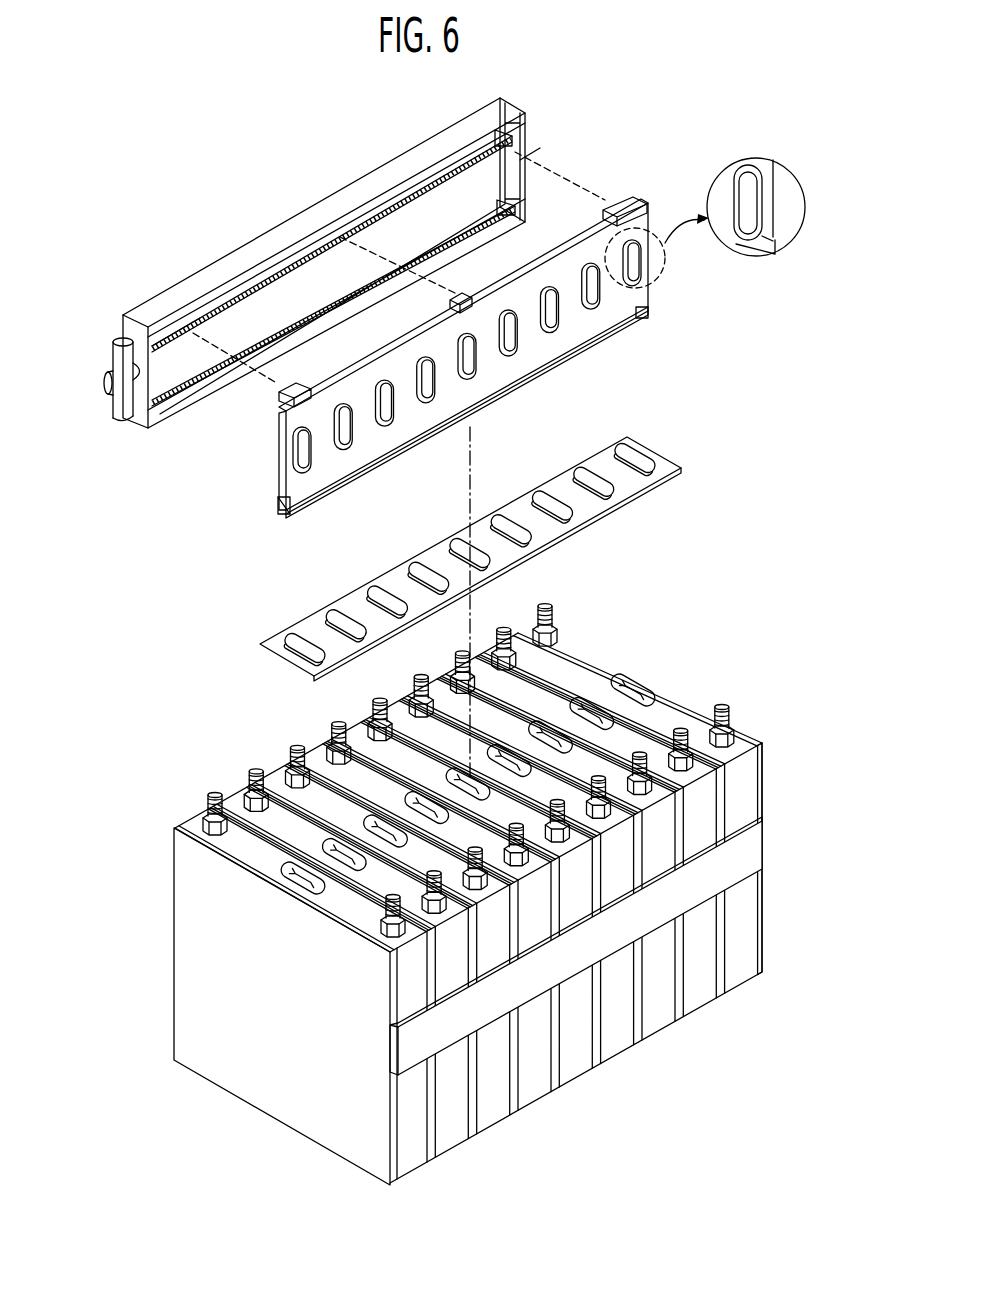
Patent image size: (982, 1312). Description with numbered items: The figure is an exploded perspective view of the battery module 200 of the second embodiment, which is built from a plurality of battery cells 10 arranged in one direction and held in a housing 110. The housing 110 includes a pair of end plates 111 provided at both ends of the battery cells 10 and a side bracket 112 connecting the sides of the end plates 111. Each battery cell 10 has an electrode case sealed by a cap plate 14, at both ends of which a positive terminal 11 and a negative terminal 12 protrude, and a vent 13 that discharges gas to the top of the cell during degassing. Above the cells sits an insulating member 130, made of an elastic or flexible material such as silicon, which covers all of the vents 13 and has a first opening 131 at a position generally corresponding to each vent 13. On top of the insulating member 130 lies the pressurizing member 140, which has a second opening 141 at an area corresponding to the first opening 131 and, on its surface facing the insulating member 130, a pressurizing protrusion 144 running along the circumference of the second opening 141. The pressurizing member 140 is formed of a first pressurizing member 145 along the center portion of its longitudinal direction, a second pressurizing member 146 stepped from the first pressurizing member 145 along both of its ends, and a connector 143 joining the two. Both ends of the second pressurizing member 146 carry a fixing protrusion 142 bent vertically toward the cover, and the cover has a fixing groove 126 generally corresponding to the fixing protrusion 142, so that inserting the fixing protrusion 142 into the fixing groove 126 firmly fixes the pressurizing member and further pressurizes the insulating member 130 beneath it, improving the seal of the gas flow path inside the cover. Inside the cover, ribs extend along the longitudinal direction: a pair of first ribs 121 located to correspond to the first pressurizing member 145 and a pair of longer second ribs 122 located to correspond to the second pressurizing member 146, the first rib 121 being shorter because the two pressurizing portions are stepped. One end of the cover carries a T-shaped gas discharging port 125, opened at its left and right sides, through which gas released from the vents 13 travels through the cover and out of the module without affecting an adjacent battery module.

The battery module 200 is at (148, 199).
The battery cell 10 is at (502, 882).
The positive terminal 11 is at (549, 607).
The negative terminal 12 is at (727, 711).
The vent 13 is at (645, 690).
The cap plate 14 is at (768, 745).
The housing 110 is at (461, 1013).
The end plate 111 is at (192, 1047).
The side bracket 112 is at (412, 1043).
The first rib 121 is at (492, 192).
The second rib 122 is at (535, 198).
The gas discharging port 125 is at (121, 400).
The fixing groove 126 is at (190, 330).
The insulating member 130 is at (441, 546).
The first opening 131 is at (640, 460).
The pressurizing member 140 is at (500, 453).
The second opening 141 is at (594, 284).
The fixing protrusion 142 is at (618, 207).
The connector 143 is at (278, 433).
The pressurizing protrusion 144 is at (768, 187).
The first pressurizing member 145 is at (277, 500).
The second pressurizing member 146 is at (551, 348).